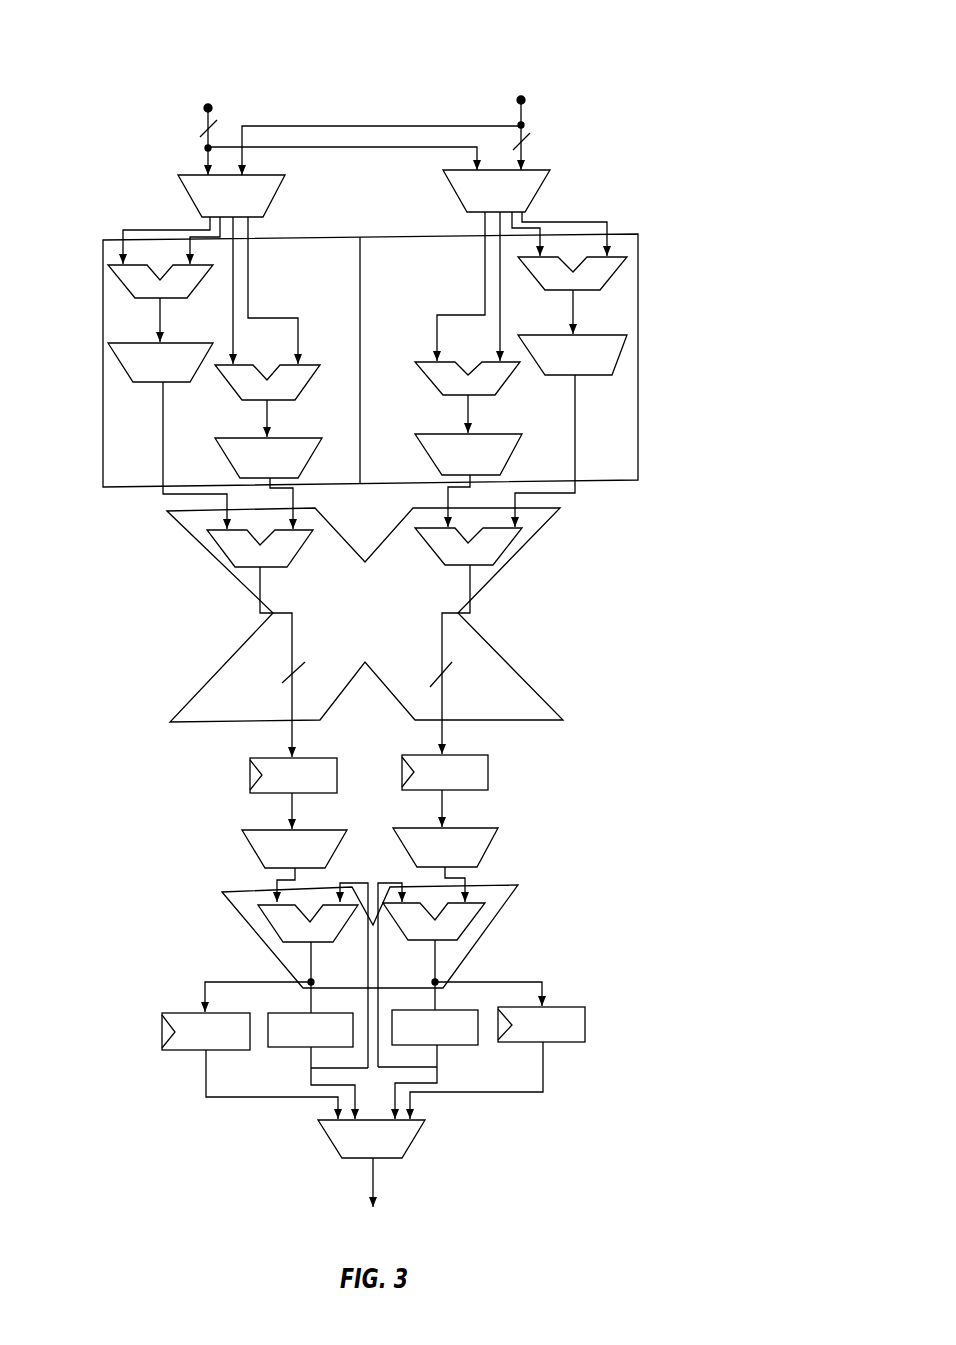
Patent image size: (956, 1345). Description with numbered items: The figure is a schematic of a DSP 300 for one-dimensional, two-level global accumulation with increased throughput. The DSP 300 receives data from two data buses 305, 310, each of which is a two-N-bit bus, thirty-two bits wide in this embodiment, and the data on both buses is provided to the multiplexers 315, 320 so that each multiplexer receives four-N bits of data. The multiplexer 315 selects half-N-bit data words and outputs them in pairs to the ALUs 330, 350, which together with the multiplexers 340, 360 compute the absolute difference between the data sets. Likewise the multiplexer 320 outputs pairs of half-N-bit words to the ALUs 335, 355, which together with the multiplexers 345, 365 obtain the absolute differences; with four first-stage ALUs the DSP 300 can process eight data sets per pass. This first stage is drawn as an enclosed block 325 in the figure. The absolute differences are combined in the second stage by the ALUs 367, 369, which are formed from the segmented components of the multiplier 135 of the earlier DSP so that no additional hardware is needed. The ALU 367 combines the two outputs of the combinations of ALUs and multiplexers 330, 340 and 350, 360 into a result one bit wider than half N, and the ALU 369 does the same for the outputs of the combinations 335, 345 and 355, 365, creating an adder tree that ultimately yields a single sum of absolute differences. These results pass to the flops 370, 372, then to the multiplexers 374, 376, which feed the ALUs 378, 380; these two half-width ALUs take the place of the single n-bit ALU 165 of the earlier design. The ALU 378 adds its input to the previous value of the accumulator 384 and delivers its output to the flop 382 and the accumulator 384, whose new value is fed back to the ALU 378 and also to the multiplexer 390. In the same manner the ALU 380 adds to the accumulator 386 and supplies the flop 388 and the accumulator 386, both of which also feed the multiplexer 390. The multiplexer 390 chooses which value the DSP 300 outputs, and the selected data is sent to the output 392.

The DSP 300 is at (670, 52).
The data bus 305 is at (199, 90).
The data bus 310 is at (528, 83).
The multiplexer 315 is at (193, 199).
The multiplexer 320 is at (543, 190).
The arithmetic unit block 325 is at (103, 437).
The ALU 330 is at (118, 282).
The ALU 335 is at (613, 272).
The multiplexer 340 is at (118, 363).
The multiplexer 345 is at (617, 353).
The ALU 350 is at (290, 402).
The ALU 355 is at (443, 397).
The multiplexer 360 is at (240, 437).
The multiplexer 365 is at (498, 433).
The ALU 367 is at (218, 548).
The ALU 369 is at (510, 543).
The multiplier 135 is at (220, 670).
The flop 370 is at (248, 773).
The flop 372 is at (490, 772).
The multiplexer 374 is at (252, 852).
The multiplexer 376 is at (490, 848).
The n-bit ALU 165 is at (515, 892).
The ALU 378 is at (270, 927).
The ALU 380 is at (475, 922).
The flop 382 is at (160, 1032).
The accumulator 384 is at (288, 1048).
The accumulator 386 is at (460, 1046).
The flop 388 is at (587, 1023).
The multiplexer 390 is at (415, 1138).
The output 392 is at (373, 1180).